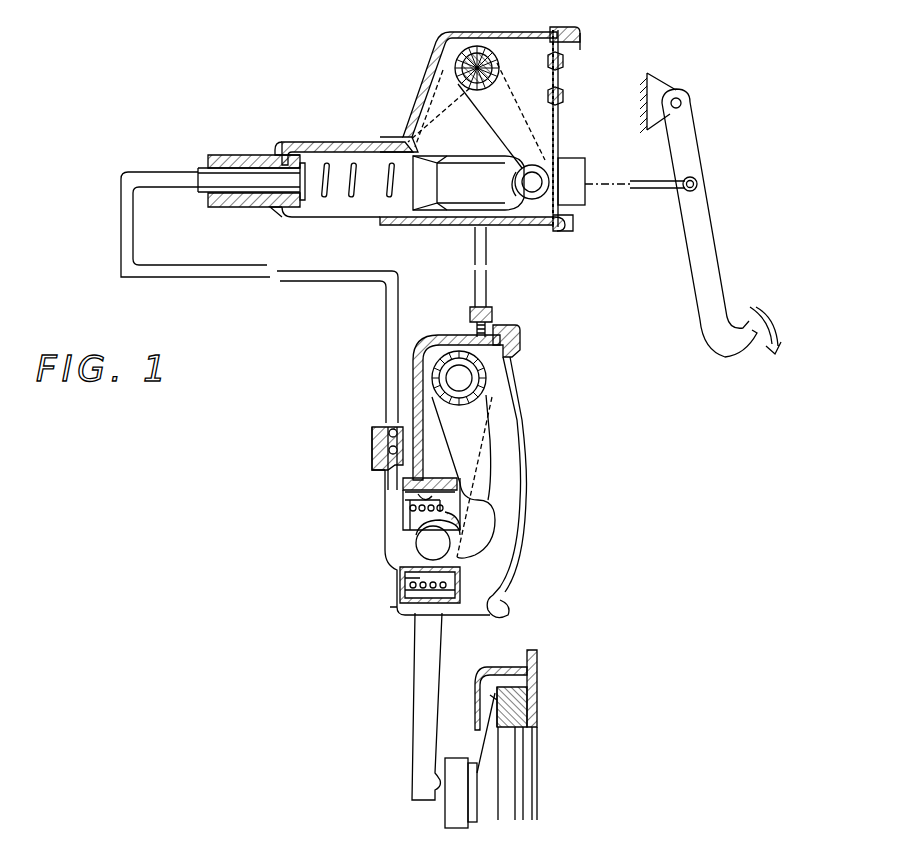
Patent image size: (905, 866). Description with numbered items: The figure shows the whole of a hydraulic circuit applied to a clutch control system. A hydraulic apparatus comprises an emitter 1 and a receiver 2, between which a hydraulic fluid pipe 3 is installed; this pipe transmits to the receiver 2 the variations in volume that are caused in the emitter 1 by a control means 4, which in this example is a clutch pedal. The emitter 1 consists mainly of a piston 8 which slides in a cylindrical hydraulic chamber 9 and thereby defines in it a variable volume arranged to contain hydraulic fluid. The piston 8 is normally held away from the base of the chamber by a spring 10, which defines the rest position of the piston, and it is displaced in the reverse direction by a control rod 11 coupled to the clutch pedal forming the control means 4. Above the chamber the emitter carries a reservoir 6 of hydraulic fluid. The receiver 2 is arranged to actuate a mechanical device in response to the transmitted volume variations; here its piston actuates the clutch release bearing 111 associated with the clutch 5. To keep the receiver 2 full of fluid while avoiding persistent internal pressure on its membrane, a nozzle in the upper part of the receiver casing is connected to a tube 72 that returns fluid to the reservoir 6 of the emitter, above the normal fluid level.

The emitter 1 is at (318, 140).
The receiver 2 is at (392, 587).
The hydraulic fluid pipe 3 is at (121, 225).
The control means 4 is at (722, 268).
The clutch 5 is at (550, 717).
The reservoir 6 is at (533, 80).
The piston 8 is at (446, 228).
The cylindrical hydraulic chamber 9 is at (312, 206).
The spring 10 is at (385, 183).
The control rod 11 is at (641, 190).
The tube 72 is at (490, 292).
The clutch release bearing 111 is at (452, 807).